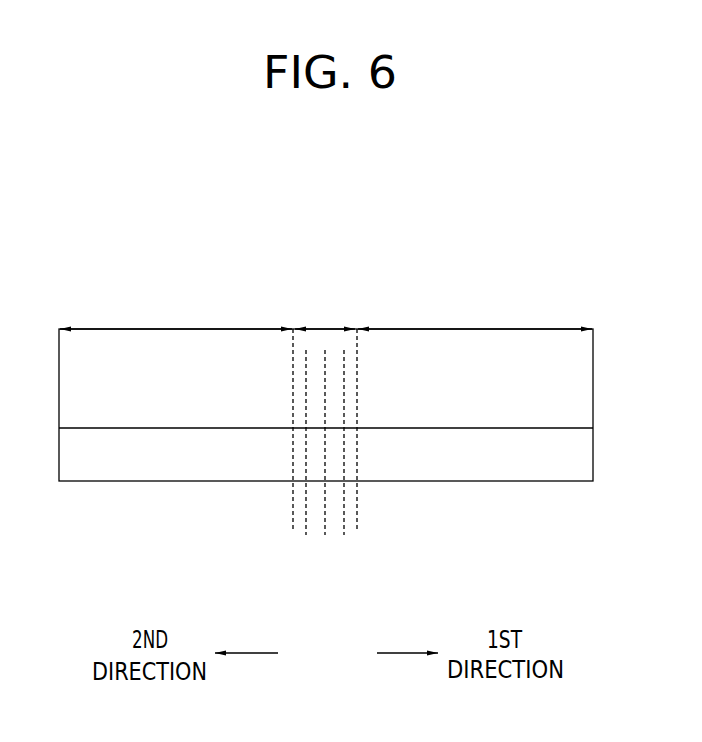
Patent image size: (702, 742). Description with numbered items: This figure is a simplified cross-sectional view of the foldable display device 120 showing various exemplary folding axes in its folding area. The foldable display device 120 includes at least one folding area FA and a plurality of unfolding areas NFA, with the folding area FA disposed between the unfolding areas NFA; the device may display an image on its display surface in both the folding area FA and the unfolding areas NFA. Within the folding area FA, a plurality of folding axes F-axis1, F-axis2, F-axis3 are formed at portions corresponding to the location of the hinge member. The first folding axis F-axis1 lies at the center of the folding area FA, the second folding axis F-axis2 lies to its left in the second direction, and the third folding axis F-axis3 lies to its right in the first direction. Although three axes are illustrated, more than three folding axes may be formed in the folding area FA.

The foldable display device 120 is at (539, 459).
The unfolding area NFA is at (326, 314).
The folding area FA is at (325, 414).
The first folding axis F-axis1 is at (327, 510).
The second folding axis F-axis2 is at (307, 508).
The third folding axis F-axis3 is at (345, 510).